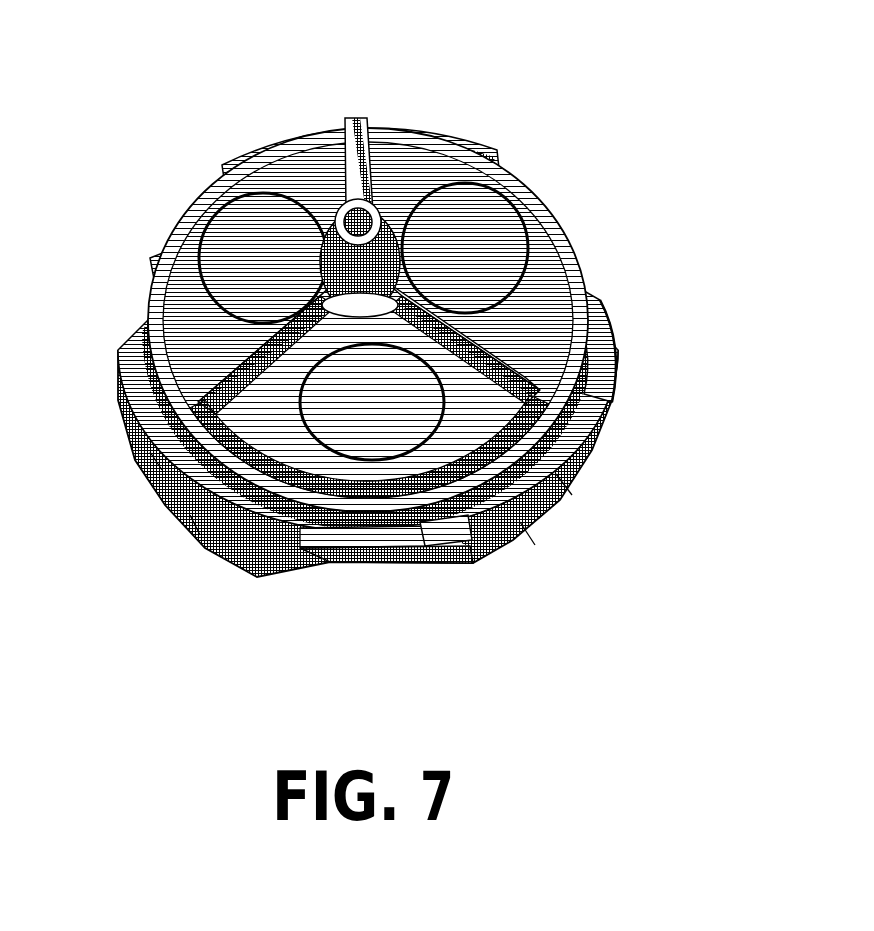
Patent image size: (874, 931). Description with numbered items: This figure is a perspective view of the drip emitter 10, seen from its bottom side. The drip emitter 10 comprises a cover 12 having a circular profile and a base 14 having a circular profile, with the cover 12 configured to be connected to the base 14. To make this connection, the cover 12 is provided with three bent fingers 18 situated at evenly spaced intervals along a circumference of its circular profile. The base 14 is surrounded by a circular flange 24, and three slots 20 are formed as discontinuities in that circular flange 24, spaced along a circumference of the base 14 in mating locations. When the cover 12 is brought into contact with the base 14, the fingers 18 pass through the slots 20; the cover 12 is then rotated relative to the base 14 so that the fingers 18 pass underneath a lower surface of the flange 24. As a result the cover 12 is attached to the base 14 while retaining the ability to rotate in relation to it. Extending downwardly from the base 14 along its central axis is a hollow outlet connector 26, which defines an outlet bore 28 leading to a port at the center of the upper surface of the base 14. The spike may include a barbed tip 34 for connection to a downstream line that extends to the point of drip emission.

The drip emitter 10 is at (463, 350).
The cover 12 is at (600, 340).
The base 14 is at (397, 167).
The bent fingers 18 is at (562, 421).
The slots 20 is at (346, 541).
The circular flange 24 is at (438, 522).
The hollow outlet connector 26 is at (372, 272).
The outlet bore 28 is at (358, 218).
The barbed tip 34 is at (322, 256).